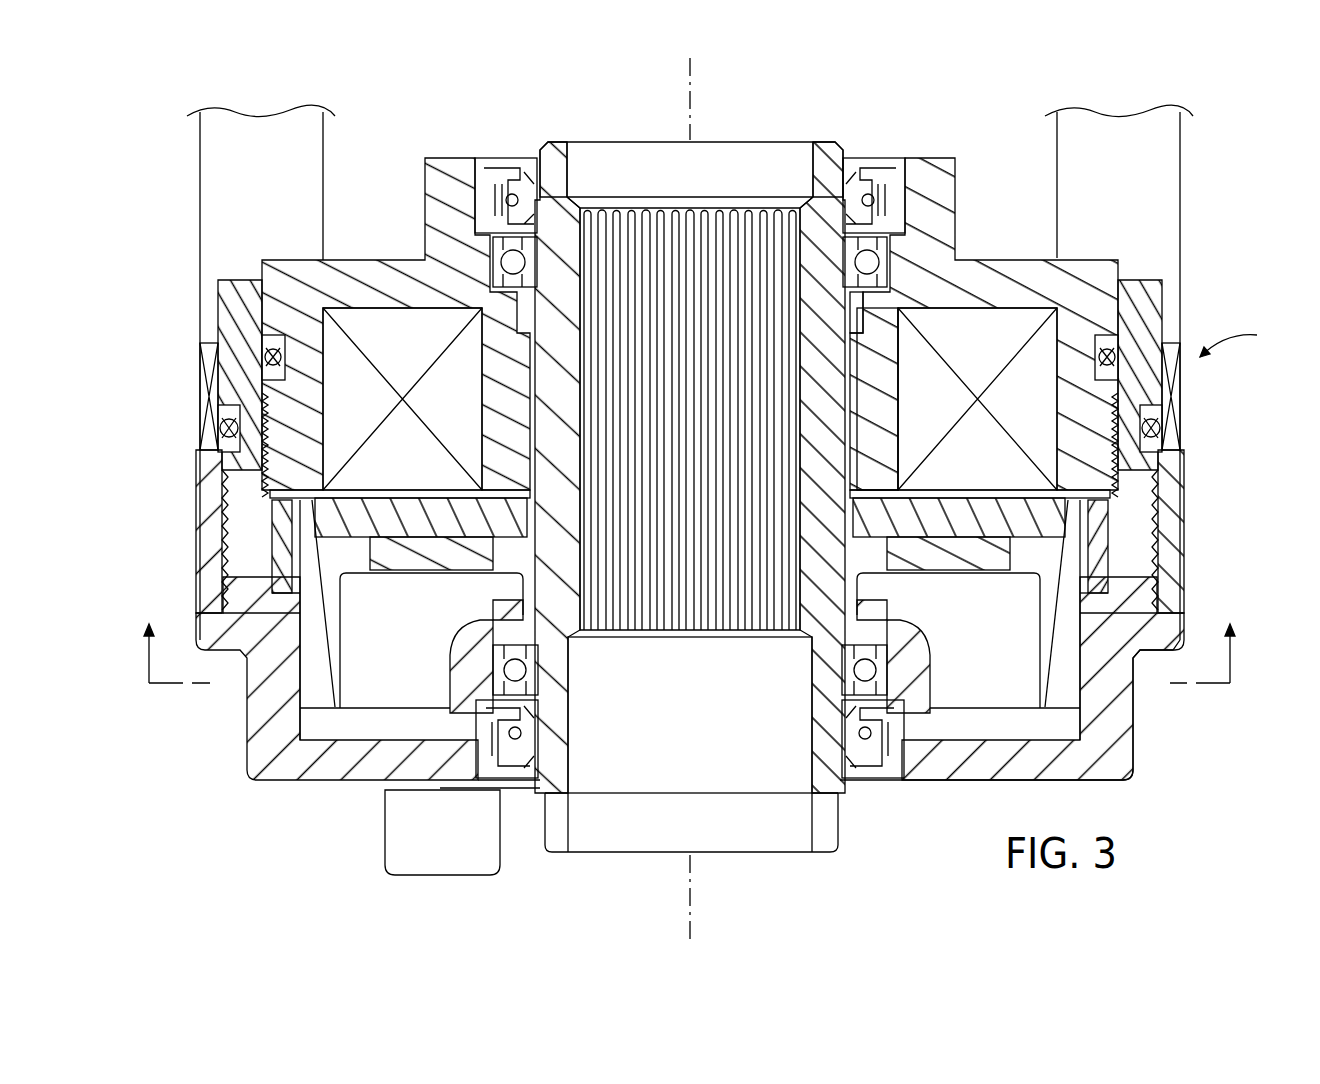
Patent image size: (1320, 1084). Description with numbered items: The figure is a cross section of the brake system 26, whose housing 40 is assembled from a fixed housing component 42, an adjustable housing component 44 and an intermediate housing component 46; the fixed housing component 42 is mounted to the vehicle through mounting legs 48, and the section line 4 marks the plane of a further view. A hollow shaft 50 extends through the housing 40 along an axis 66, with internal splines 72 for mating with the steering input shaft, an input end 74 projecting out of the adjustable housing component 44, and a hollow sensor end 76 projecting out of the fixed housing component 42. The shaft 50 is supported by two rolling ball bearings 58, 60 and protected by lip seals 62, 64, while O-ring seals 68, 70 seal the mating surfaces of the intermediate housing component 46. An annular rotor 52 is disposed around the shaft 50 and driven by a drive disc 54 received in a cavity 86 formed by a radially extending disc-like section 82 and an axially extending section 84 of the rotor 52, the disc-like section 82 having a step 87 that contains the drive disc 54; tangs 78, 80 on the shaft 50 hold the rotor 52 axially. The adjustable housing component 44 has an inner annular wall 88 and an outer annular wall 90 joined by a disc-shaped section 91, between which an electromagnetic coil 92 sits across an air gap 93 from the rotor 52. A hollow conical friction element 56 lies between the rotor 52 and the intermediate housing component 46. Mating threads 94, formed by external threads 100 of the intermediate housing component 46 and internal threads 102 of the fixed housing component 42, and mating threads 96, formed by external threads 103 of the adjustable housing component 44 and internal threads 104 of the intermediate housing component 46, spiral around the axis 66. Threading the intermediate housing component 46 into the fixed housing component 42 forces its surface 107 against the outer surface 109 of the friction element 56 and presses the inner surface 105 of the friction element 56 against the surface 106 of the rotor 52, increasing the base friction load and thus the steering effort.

The section line 4- 4 is at (688, 641).
The brake system 26 is at (1246, 340).
The housing 40 is at (1190, 575).
The fixed housing component 42 is at (1157, 617).
The adjustable housing component 44 is at (957, 173).
The intermediate housing component 46 is at (1140, 318).
The mounting legs 48 is at (200, 172).
The shaft 50 is at (840, 820).
The rotor 52 is at (287, 720).
The drive disc 54 is at (442, 563).
The friction element 56 is at (300, 620).
The bearing 58 is at (497, 250).
The bearing 60 is at (550, 687).
The seal 62 is at (513, 170).
The seal 64 is at (520, 783).
The axis 66 is at (688, 98).
The O-ring seal 68 is at (220, 423).
The O-ring seal 70 is at (220, 325).
The internal splines 72 is at (703, 253).
The input end 74 is at (825, 142).
The sensor end 76 is at (818, 853).
The tang 78 is at (890, 595).
The tang 80 is at (510, 577).
The disc-like section 82 is at (457, 513).
The axially extending section 84 is at (1060, 682).
The cavity 86 is at (358, 690).
The step 87 is at (410, 537).
The inner annular wall 88 is at (873, 435).
The outer annular wall 90 is at (1090, 318).
The disc-shaped section 91 is at (1013, 277).
The electromagnetic coil 92 is at (973, 337).
The air gap 93 is at (918, 490).
The mating threads 94 is at (1160, 507).
The mating threads 96 is at (1140, 462).
The external threads 100 is at (217, 527).
The internal threads 102 is at (227, 552).
The external threads 103 is at (267, 458).
The internal threads 104 is at (275, 440).
The inner surface 105 is at (1085, 560).
The surface 106 is at (1100, 510).
The surface 107 is at (1087, 597).
The outer surface 109 is at (1093, 530).